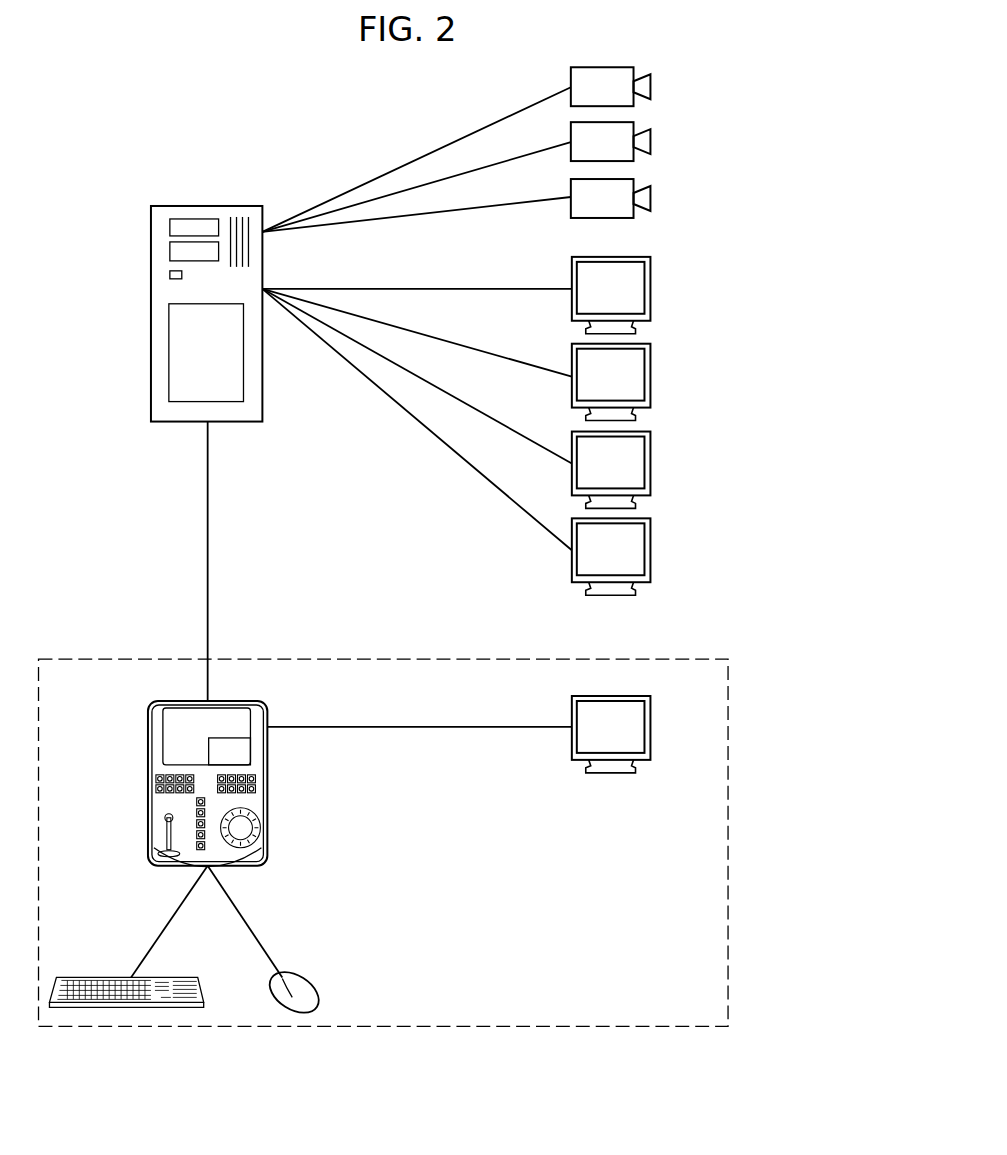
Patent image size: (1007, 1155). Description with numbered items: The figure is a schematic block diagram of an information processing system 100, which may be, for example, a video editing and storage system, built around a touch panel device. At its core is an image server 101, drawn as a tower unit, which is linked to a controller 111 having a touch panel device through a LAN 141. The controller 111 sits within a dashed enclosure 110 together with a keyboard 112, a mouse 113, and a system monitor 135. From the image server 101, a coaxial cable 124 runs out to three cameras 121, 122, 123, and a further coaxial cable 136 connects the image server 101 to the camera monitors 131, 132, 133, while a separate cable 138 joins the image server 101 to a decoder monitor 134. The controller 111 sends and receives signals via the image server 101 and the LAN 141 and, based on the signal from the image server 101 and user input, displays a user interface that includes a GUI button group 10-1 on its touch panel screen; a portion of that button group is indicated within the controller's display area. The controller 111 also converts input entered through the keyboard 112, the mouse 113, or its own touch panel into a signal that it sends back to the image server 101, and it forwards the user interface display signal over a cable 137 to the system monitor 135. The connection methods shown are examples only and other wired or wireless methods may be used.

The information processing system 100 is at (166, 68).
The image server 101 is at (207, 207).
The control station 110 is at (422, 660).
The controller 111 is at (267, 784).
The keyboard 112 is at (70, 978).
The mouse 113 is at (302, 977).
The camera 121 is at (652, 82).
The camera 122 is at (652, 137).
The camera 123 is at (652, 194).
The coaxial cable 124 is at (392, 172).
The camera monitor 131 is at (652, 275).
The camera monitor 132 is at (652, 362).
The camera monitor 133 is at (652, 450).
The decoder monitor 134 is at (652, 537).
The system monitor 135 is at (652, 712).
The coaxial cable 136 is at (452, 288).
The cable 137 is at (469, 732).
The cable 138 is at (457, 461).
The LAN 141 is at (207, 520).
The GUI button group 10-1 is at (245, 750).